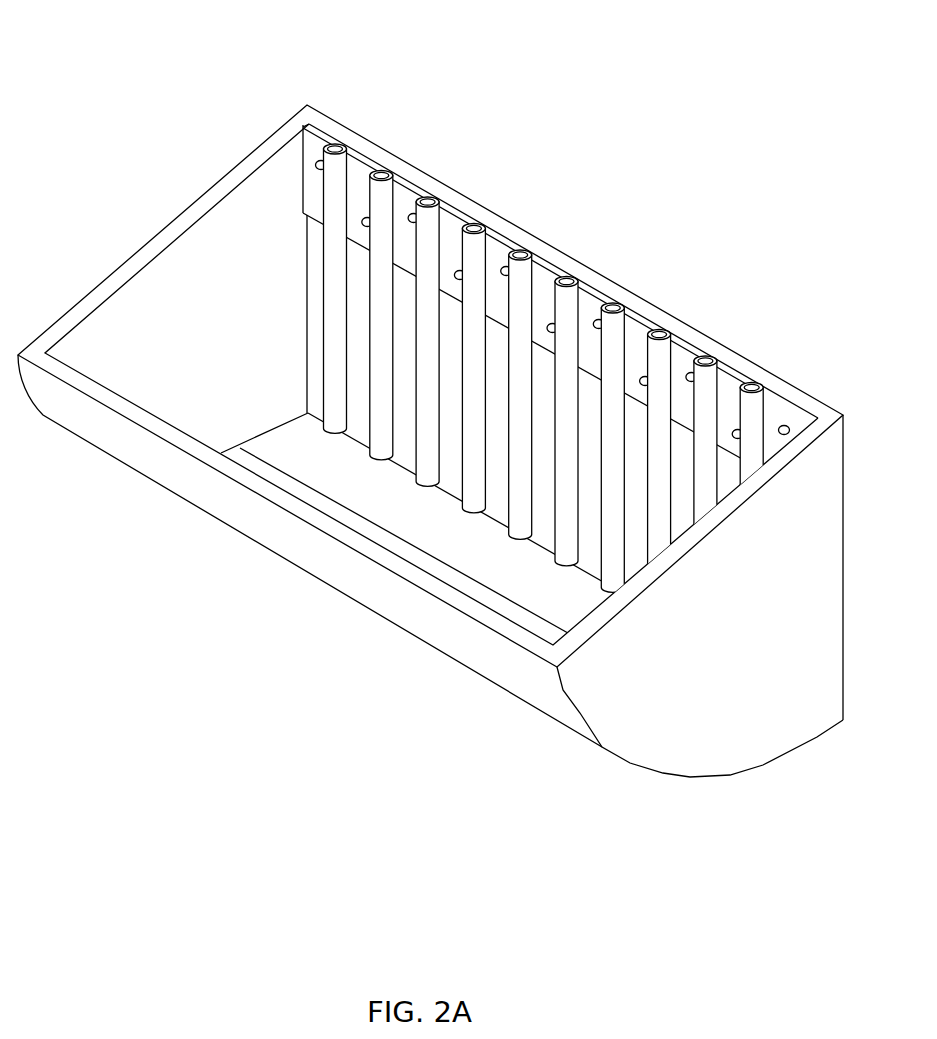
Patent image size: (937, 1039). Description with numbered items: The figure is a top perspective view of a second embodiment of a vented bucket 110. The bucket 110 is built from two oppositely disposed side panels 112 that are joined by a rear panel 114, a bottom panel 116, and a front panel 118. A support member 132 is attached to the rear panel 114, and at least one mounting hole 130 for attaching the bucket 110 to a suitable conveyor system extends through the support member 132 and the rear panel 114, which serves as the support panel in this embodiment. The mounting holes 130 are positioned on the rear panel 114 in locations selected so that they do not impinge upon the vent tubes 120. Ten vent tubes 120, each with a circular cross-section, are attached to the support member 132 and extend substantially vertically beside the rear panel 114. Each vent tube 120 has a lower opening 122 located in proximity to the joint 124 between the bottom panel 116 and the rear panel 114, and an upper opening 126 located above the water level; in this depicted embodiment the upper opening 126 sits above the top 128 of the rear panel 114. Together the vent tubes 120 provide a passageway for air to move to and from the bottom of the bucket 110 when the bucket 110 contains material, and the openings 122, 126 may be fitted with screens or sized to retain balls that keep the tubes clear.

The vented bucket 110 is at (104, 113).
The side panels 112 is at (103, 283).
The rear panel 114 is at (548, 245).
The bottom panel 116 is at (300, 455).
The front panel 118 is at (333, 572).
The vent tube 120 is at (323, 262).
The lower opening 122 is at (472, 517).
The joint 124 is at (585, 575).
The upper opening 126 is at (618, 298).
The top 128 is at (690, 335).
The mounting hole 130 is at (412, 218).
The support member 132 is at (498, 237).